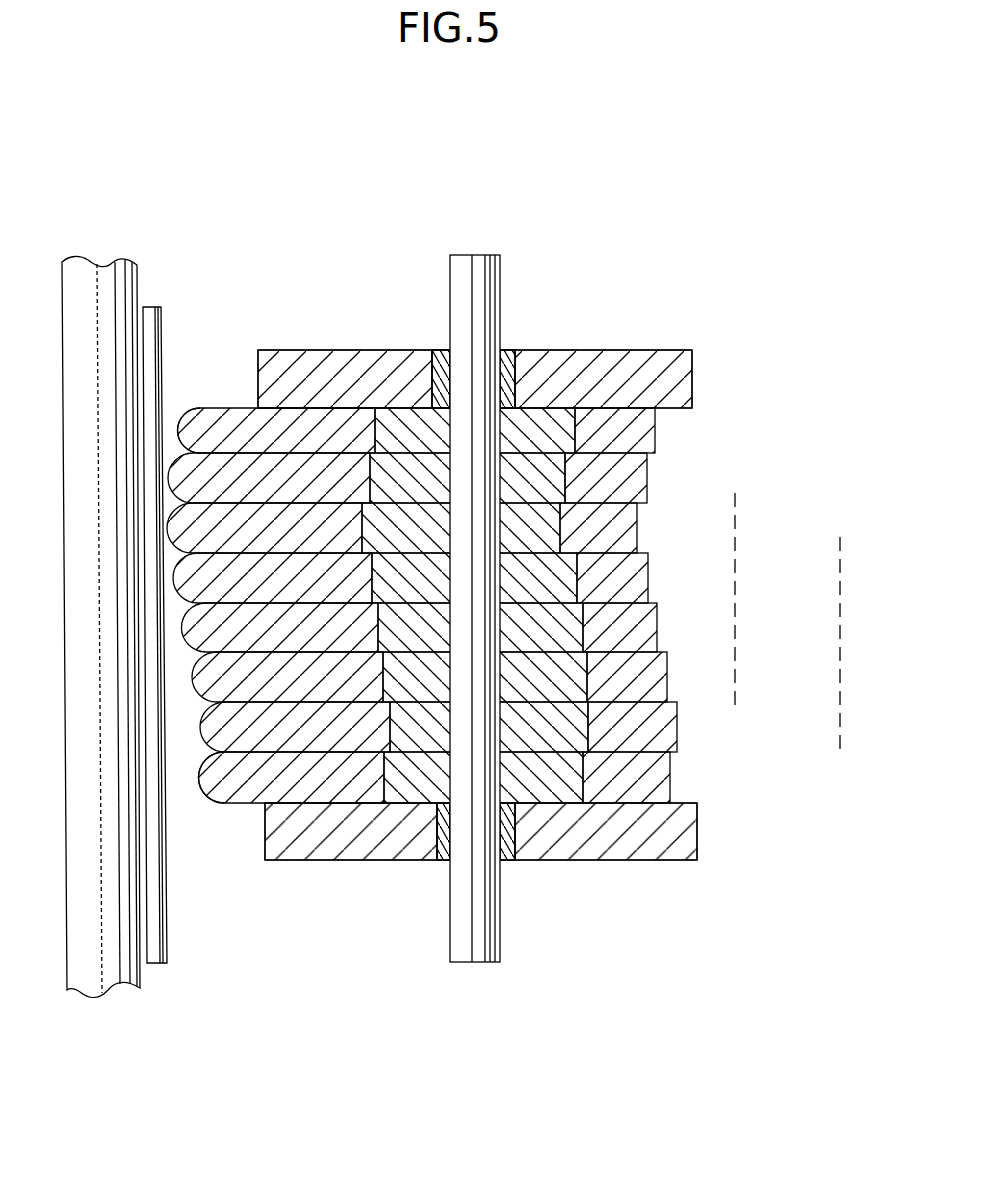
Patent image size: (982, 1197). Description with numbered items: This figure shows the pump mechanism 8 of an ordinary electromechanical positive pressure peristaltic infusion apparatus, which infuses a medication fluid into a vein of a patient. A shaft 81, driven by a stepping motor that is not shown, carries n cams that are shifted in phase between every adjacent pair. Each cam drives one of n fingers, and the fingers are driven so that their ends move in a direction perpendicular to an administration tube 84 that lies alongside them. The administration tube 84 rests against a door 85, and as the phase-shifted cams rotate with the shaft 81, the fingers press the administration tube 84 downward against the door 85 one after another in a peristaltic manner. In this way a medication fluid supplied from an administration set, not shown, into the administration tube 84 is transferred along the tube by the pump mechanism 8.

The pump mechanism 8 is at (632, 273).
The shaft 81 is at (452, 272).
The administration tube 84 is at (157, 302).
The door 85 is at (102, 990).